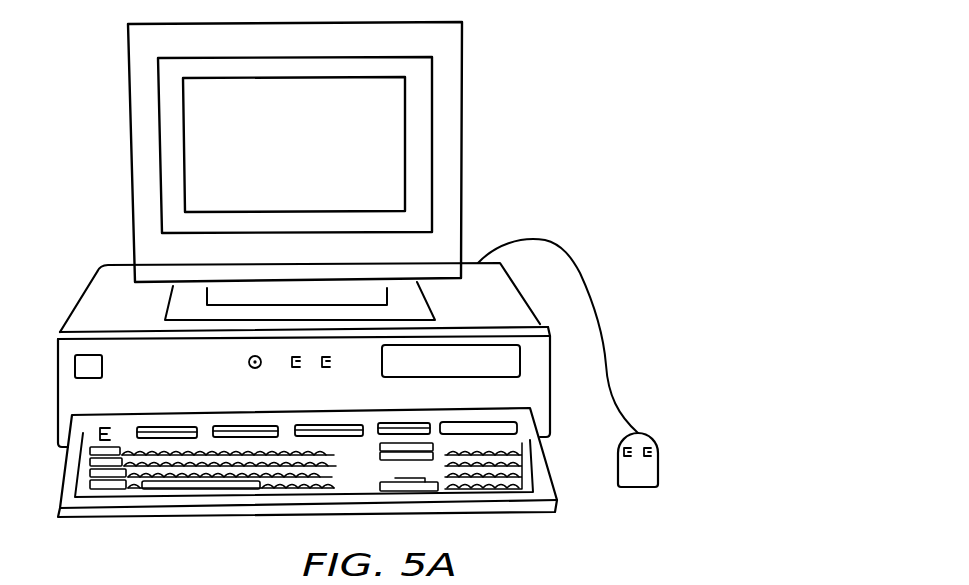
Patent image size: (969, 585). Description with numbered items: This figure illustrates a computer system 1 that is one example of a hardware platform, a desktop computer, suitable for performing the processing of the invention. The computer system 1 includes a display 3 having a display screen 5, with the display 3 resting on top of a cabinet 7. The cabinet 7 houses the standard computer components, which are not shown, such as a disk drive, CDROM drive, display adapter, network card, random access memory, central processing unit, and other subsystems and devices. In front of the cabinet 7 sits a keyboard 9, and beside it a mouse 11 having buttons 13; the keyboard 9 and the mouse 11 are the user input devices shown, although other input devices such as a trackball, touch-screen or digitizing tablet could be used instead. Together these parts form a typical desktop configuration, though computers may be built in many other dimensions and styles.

The computer system 1 is at (603, 45).
The display 3 is at (462, 123).
The display screen 5 is at (380, 117).
The cabinet 7 is at (507, 310).
The keyboard 9 is at (247, 518).
The mouse 11 is at (650, 470).
The buttons 13 is at (648, 446).